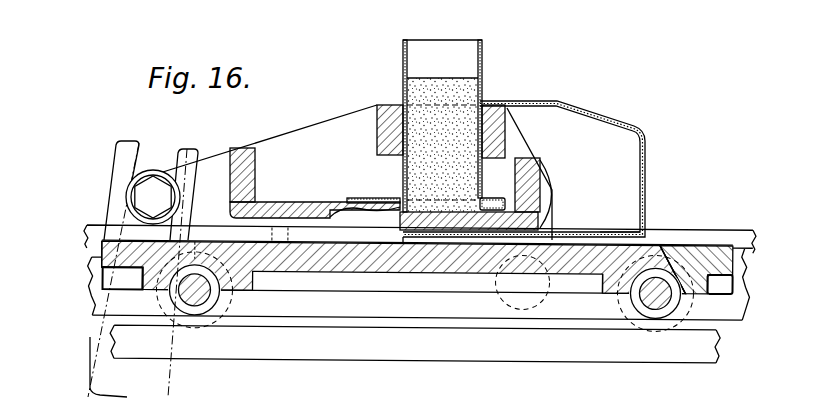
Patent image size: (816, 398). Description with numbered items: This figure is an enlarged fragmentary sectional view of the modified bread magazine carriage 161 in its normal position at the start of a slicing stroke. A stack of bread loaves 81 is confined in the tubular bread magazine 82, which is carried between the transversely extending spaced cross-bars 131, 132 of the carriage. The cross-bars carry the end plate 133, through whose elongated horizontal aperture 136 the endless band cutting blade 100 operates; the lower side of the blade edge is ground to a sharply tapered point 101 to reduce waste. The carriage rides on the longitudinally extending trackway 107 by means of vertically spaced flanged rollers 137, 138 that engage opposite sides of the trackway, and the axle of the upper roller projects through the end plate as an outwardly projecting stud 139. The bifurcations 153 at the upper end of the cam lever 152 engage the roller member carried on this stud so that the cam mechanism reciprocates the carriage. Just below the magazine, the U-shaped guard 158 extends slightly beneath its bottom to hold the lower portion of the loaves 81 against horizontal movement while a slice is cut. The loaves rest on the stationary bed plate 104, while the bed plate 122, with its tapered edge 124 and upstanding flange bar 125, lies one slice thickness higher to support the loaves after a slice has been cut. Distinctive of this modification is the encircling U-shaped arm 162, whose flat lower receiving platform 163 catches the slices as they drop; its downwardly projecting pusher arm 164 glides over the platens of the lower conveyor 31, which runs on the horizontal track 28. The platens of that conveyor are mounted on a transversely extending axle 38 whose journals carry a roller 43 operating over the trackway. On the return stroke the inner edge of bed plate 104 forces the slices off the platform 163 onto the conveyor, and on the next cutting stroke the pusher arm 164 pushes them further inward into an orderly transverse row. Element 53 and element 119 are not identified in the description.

The horizontal track 28 is at (286, 347).
The lower conveyor 31 is at (705, 246).
The axle 38 is at (200, 314).
The roller 43 is at (228, 303).
The block 53 is at (683, 250).
The bread loaf 81 is at (440, 86).
The bread magazine 82 is at (492, 57).
The endless band cutting blade 100 is at (370, 198).
The sharply tapered point 101 is at (383, 220).
The bed plate 104 is at (540, 223).
The trackway 107 is at (741, 232).
The block 119 is at (541, 160).
The bed plate 122 is at (309, 202).
The tapered edge 124 is at (332, 214).
The upstanding flange bar 125 is at (257, 166).
The cross-bar 131 is at (377, 131).
The cross-bar 132 is at (507, 136).
The end plate 133 is at (301, 128).
The elongated aperture 136 is at (326, 238).
The upper flanged roller 137 is at (551, 193).
The lower flanged roller 138 is at (92, 305).
The stud 139 is at (130, 188).
The cam lever 152 is at (87, 369).
The bifurcation 153 is at (185, 147).
The U-shaped guard 158 is at (490, 198).
The modified bread magazine carriage 161 is at (342, 98).
The encircling U-shaped arm 162 is at (598, 112).
The receiving platform 163 is at (602, 231).
The pusher arm 164 is at (402, 239).